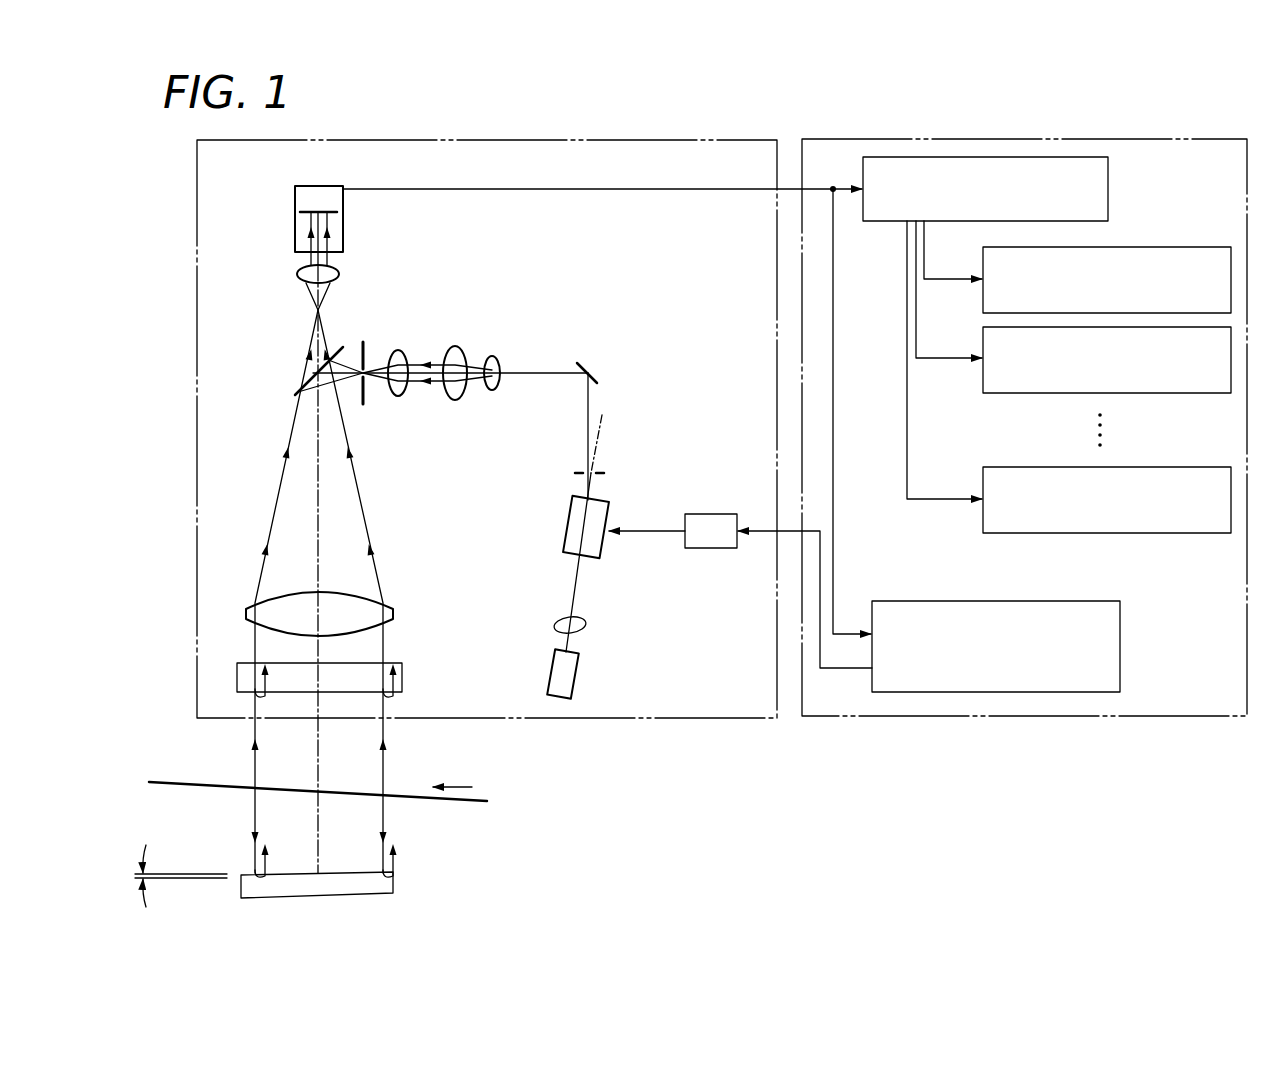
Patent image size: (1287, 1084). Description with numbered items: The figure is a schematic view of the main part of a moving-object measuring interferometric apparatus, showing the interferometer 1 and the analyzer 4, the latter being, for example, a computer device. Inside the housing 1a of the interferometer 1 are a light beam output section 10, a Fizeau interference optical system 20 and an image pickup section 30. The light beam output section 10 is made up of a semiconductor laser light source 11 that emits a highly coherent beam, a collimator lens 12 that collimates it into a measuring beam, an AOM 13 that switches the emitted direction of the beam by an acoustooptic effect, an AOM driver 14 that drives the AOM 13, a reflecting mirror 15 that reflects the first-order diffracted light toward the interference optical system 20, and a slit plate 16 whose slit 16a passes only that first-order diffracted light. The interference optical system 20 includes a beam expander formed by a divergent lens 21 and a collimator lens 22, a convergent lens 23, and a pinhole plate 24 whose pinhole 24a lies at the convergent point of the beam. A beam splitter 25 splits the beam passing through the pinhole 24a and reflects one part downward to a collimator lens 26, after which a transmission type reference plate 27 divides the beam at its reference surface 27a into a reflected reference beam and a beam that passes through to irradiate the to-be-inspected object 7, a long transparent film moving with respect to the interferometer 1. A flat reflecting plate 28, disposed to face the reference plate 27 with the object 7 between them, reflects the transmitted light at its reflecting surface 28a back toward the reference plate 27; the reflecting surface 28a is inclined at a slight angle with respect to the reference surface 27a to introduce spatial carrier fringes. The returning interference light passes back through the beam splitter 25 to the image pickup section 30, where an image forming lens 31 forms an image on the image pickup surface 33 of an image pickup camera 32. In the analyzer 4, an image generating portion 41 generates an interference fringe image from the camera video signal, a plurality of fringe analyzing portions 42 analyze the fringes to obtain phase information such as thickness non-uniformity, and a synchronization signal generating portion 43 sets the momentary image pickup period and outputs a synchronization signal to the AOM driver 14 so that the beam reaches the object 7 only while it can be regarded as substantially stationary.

The interferometer 1 is at (160, 236).
The housing 1a is at (686, 140).
The analyzer 4 is at (1186, 137).
The to-be-inspected object 7 is at (487, 801).
The light beam output section 10 is at (661, 436).
The semiconductor laser light source 11 is at (580, 668).
The collimator lens 12 is at (588, 626).
The AOM (acoustooptic modulator) 13 is at (606, 500).
The AOM driver 14 is at (722, 514).
The reflecting mirror 15 is at (597, 378).
The slit plate 16 is at (605, 467).
The slit 16a is at (584, 469).
The Fizeau interference optical system 20 is at (296, 342).
The divergent lens 21 is at (492, 357).
The collimator lens 22 is at (455, 347).
The convergent lens 23 is at (398, 351).
The pinhole plate 24 is at (358, 344).
The pinhole 24a is at (366, 376).
The beam splitter 25 is at (296, 394).
The collimator lens 26 is at (393, 604).
The transmission type reference plate 27 is at (404, 660).
The reference surface 27a is at (405, 691).
The flat reflecting plate 28 is at (402, 886).
The reflecting surface 28a is at (395, 873).
The image pickup section 30 is at (380, 231).
The image forming lens 31 is at (339, 273).
The image pickup camera 32 is at (343, 206).
The image pickup surface 33 is at (300, 222).
The image generating portion 41 is at (1110, 172).
The fringe analyzing portion 42 is at (1231, 262).
The synchronization signal generating portion 43 is at (1120, 615).